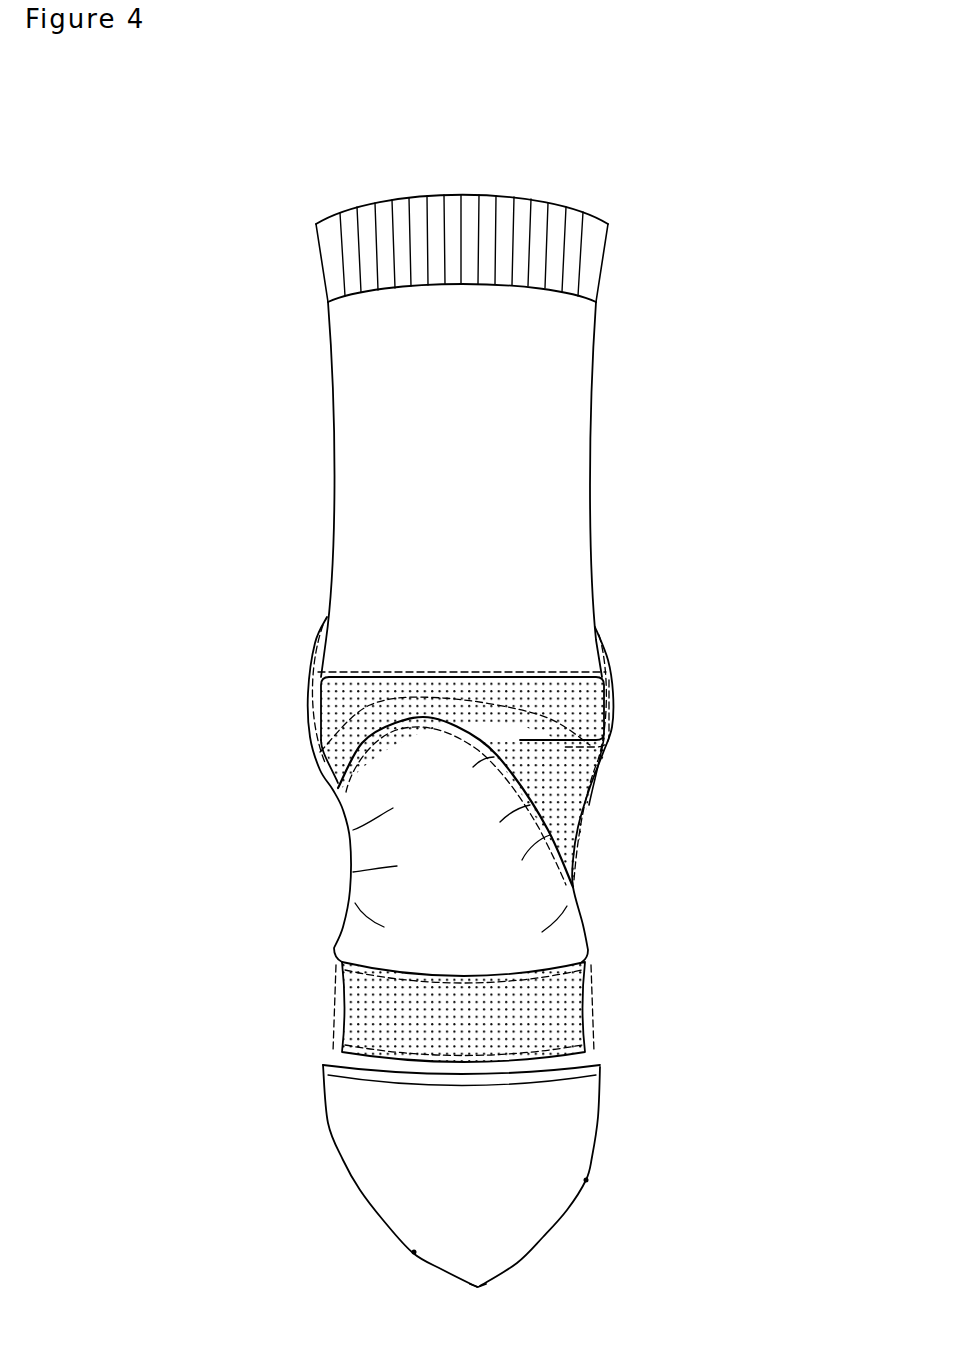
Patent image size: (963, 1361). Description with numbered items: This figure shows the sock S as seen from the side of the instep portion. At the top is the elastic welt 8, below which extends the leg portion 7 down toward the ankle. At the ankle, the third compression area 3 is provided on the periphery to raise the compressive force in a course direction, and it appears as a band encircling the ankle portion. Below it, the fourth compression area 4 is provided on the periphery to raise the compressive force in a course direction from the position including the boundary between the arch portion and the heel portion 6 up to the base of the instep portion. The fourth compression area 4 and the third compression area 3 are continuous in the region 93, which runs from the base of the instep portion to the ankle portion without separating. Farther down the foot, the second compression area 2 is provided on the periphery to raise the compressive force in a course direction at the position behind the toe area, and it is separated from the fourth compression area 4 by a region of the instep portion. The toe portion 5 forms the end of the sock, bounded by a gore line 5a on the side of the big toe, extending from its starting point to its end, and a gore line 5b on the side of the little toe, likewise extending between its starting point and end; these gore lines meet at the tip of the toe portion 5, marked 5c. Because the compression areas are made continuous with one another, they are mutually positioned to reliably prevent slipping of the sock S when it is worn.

The sock S is at (572, 190).
The elastic welt 8 is at (370, 218).
The leg portion 7 is at (350, 391).
The heel portion 6 is at (606, 662).
The third compression area 3 is at (615, 688).
The region where the fourth and third compression areas are continuous 93 is at (385, 710).
The fourth compression area 4 is at (582, 826).
The second compression area 2 is at (588, 990).
The toe portion 5 is at (530, 1235).
The gore line on the side of the big toe 5a is at (597, 1125).
The gore line on the side of the little toe 5b is at (344, 1160).
The toe tip 5c is at (478, 1291).